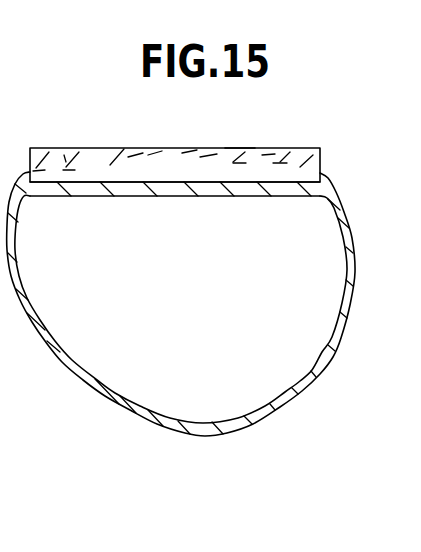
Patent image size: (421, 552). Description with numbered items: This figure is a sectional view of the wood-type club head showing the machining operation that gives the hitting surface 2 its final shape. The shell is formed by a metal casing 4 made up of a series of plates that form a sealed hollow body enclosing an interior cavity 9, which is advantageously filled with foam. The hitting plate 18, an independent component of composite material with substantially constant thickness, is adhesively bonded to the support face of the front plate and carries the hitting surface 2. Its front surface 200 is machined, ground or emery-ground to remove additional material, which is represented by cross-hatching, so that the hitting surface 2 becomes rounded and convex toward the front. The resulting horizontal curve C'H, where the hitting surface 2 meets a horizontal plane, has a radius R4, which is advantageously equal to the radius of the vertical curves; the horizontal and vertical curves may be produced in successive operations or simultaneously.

The hitting surface 2 is at (288, 150).
The metal casing 4 is at (82, 381).
The interior cavity 9 is at (288, 366).
The hitting plate 18 is at (110, 165).
The front surface 200 is at (238, 149).
The radius of horizontal curves R4 is at (248, 163).
The horizontal curve C'H is at (50, 115).